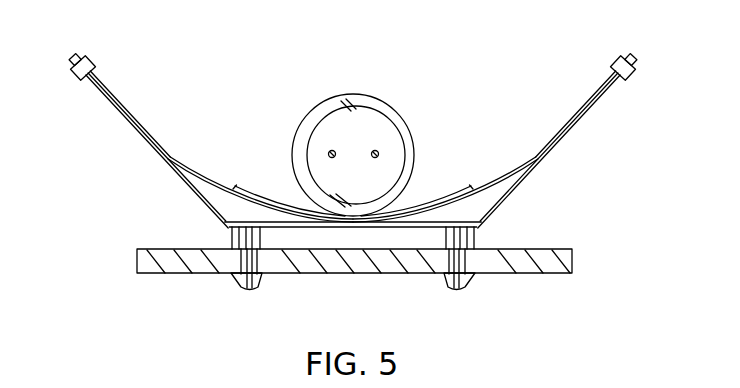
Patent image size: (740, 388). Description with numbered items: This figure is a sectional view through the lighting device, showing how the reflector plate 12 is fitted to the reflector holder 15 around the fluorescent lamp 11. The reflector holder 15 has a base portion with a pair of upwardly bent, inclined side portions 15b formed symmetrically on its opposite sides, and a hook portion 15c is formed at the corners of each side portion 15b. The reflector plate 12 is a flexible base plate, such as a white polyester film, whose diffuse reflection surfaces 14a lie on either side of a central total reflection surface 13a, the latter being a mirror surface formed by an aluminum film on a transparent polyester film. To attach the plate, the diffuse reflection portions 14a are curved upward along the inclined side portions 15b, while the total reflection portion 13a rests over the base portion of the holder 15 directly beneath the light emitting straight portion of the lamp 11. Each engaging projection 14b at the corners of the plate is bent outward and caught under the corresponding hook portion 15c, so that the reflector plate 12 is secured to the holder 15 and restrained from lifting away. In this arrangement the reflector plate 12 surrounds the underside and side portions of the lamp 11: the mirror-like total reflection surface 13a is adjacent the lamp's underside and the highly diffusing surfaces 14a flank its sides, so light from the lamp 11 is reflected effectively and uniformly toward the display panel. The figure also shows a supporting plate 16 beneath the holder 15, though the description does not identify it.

The fluorescent lamp 11 is at (310, 118).
The reflector plate 12 is at (353, 150).
The total reflection surface 13a is at (455, 188).
The diffuse reflection surface 14a is at (120, 97).
The engaging projection 14b is at (80, 80).
The reflector holder 15 is at (292, 228).
The side portion 15b is at (511, 198).
The hook portion 15c is at (70, 58).
The mounting plate 16 is at (503, 258).